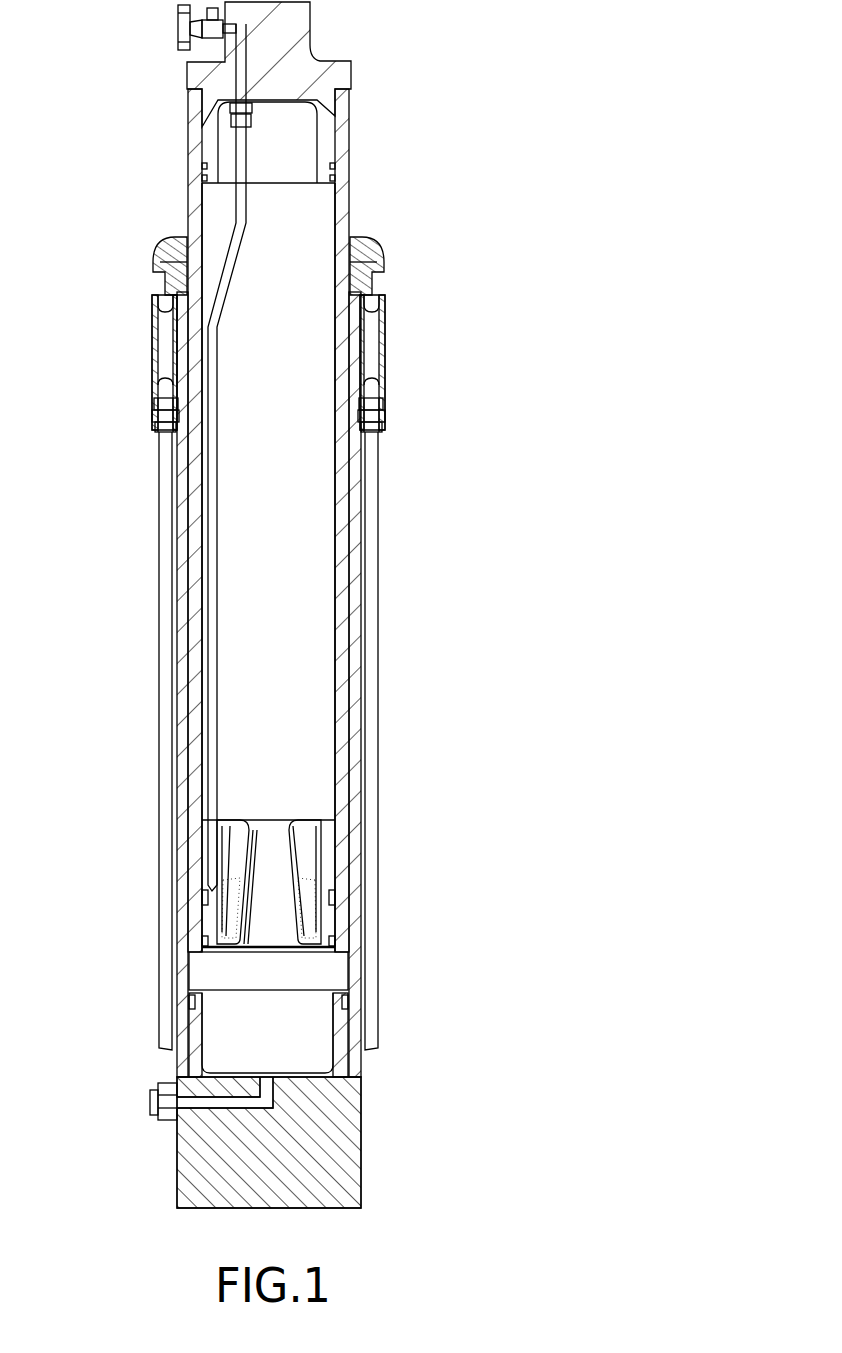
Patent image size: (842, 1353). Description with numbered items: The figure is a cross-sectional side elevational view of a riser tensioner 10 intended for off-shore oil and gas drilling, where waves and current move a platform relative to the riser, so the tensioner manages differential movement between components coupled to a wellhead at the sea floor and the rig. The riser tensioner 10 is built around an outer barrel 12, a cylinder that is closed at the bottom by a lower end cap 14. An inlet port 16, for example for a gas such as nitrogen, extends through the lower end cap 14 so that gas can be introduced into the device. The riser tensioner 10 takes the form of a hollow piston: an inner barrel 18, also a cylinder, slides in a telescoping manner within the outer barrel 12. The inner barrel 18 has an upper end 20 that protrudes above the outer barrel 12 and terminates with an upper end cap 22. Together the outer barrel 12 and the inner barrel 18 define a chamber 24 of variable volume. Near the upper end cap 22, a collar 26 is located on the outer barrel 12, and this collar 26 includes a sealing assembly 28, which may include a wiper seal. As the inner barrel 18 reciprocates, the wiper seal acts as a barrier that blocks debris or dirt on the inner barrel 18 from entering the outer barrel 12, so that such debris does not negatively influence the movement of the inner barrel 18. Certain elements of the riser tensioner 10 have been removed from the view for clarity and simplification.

The riser tensioner 10 is at (395, 860).
The outer barrel 12 is at (178, 732).
The lower end cap 14 is at (361, 1157).
The inlet port 16 is at (177, 1106).
The inner barrel 18 is at (338, 709).
The upper end 20 is at (410, 117).
The upper end cap 22 is at (310, 15).
The chamber 24 is at (277, 635).
The collar 26 is at (384, 283).
The sealing assembly 28 is at (168, 262).